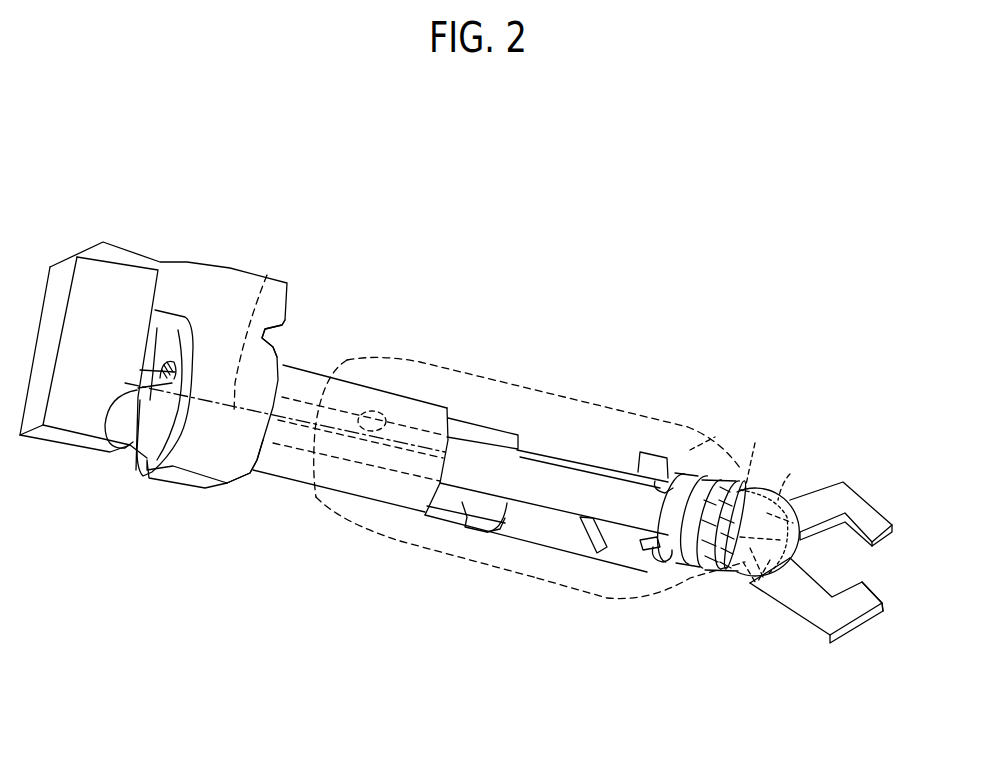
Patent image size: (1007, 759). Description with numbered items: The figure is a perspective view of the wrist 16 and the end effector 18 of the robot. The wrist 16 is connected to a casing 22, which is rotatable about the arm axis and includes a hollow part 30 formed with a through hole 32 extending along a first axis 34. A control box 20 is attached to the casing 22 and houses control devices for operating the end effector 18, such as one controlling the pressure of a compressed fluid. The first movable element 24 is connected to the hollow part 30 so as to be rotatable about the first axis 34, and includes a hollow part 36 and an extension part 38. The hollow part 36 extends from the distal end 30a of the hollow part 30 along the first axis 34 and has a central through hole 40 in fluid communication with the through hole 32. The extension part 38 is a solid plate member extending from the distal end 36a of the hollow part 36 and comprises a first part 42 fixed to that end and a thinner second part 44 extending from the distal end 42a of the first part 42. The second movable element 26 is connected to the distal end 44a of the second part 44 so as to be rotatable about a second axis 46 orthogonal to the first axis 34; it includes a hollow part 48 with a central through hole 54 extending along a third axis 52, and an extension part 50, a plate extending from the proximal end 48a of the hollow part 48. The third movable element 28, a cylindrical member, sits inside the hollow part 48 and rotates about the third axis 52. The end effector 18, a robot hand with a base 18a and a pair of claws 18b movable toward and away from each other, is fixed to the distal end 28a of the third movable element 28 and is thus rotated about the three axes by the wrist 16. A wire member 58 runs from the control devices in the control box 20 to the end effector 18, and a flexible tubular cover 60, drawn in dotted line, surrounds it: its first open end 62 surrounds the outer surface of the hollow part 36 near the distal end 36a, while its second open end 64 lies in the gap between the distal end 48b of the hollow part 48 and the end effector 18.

The wrist 16 is at (513, 239).
The end effector 18 is at (843, 641).
The base 18a is at (747, 563).
The claws 18b is at (891, 537).
The control box 20 is at (78, 417).
The casing 22 is at (230, 267).
The first movable element 24 is at (397, 520).
The second movable element 26 is at (663, 468).
The third movable element 28 is at (760, 487).
The distal end of third movable element 28a is at (784, 493).
The hollow part 30 is at (222, 470).
The distal end of hollow part 30a is at (267, 463).
The through hole 32 is at (110, 452).
The first axis 34 is at (267, 272).
The hollow part 36 is at (340, 480).
The distal end of hollow part 36a is at (463, 420).
The extension part 38 is at (538, 556).
The through hole 40 is at (383, 420).
The first part 42 is at (462, 505).
The distal end of first part 42a is at (503, 513).
The second part 44 is at (570, 550).
The distal end of second part 44a is at (628, 563).
The second axis 46 is at (755, 443).
The hollow part 48 is at (687, 473).
The proximal end of hollow part 48a is at (647, 563).
The distal end of hollow part 48b is at (705, 580).
The extension part 50 is at (637, 463).
The third axis 52 is at (754, 590).
The through hole 54 is at (667, 567).
The wire member 58 is at (142, 387).
The cover 60 is at (547, 390).
The first open end 62 is at (318, 390).
The second open end 64 is at (790, 474).